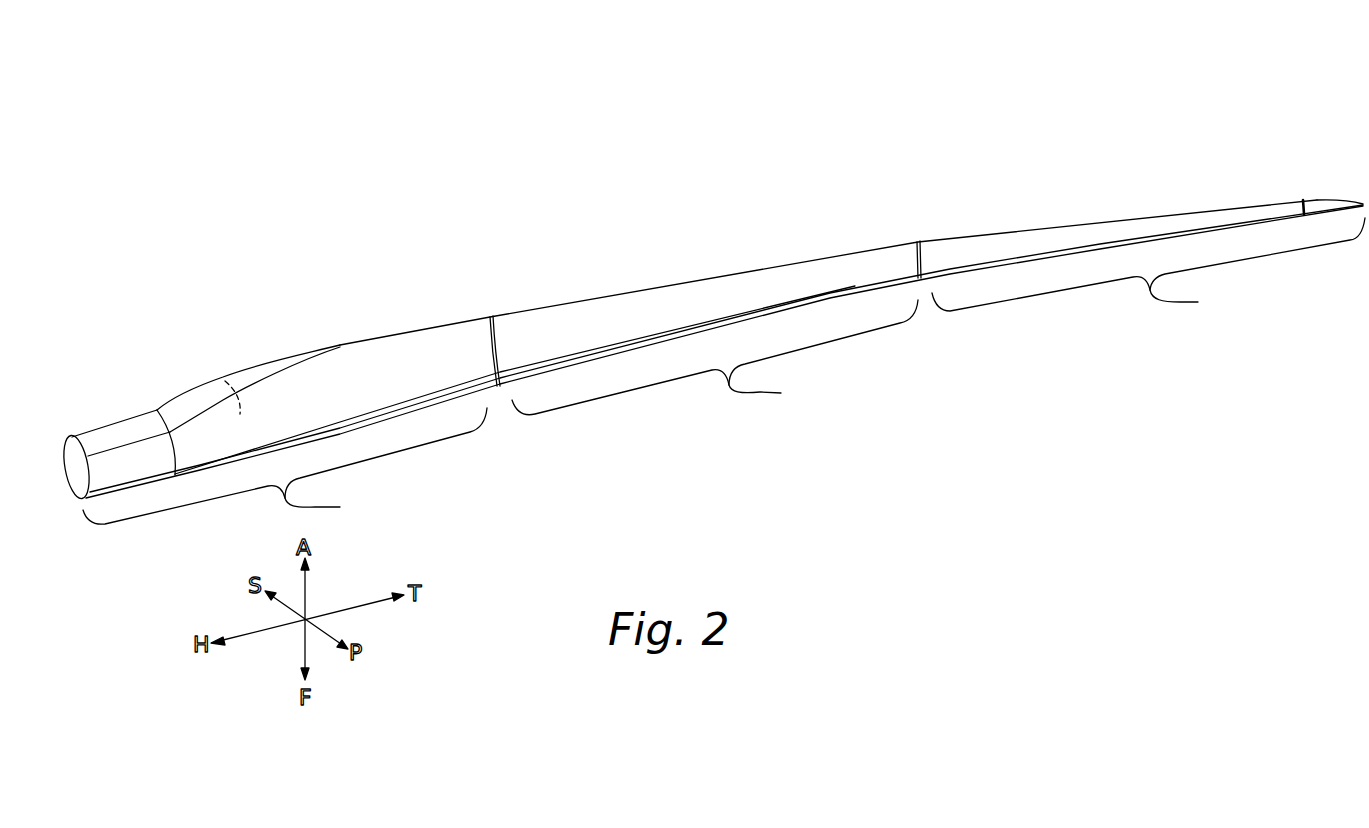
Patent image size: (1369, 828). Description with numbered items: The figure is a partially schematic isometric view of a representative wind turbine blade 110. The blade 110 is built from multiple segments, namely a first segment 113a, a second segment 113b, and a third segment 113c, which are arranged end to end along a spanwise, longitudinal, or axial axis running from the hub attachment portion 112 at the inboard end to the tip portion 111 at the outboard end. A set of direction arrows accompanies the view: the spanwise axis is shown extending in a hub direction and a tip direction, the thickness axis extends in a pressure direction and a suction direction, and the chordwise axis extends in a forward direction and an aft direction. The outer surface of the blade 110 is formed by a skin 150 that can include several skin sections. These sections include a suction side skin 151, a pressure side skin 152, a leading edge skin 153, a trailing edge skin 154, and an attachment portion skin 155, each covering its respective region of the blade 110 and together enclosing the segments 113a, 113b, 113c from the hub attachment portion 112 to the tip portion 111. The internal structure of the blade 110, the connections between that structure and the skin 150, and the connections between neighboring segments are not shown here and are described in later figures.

The blade 110 is at (700, 135).
The tip portion 111 is at (1320, 200).
The hub attachment portion 112 is at (97, 440).
The first segment 113a is at (285, 466).
The second segment 113b is at (715, 357).
The third segment 113c is at (1148, 268).
The skin 150 is at (317, 380).
The suction side skin 151 is at (224, 380).
The pressure side skin 152 is at (384, 373).
The leading edge skin 153 is at (413, 402).
The trailing edge skin 154 is at (177, 397).
The attachment portion skin 155 is at (100, 468).